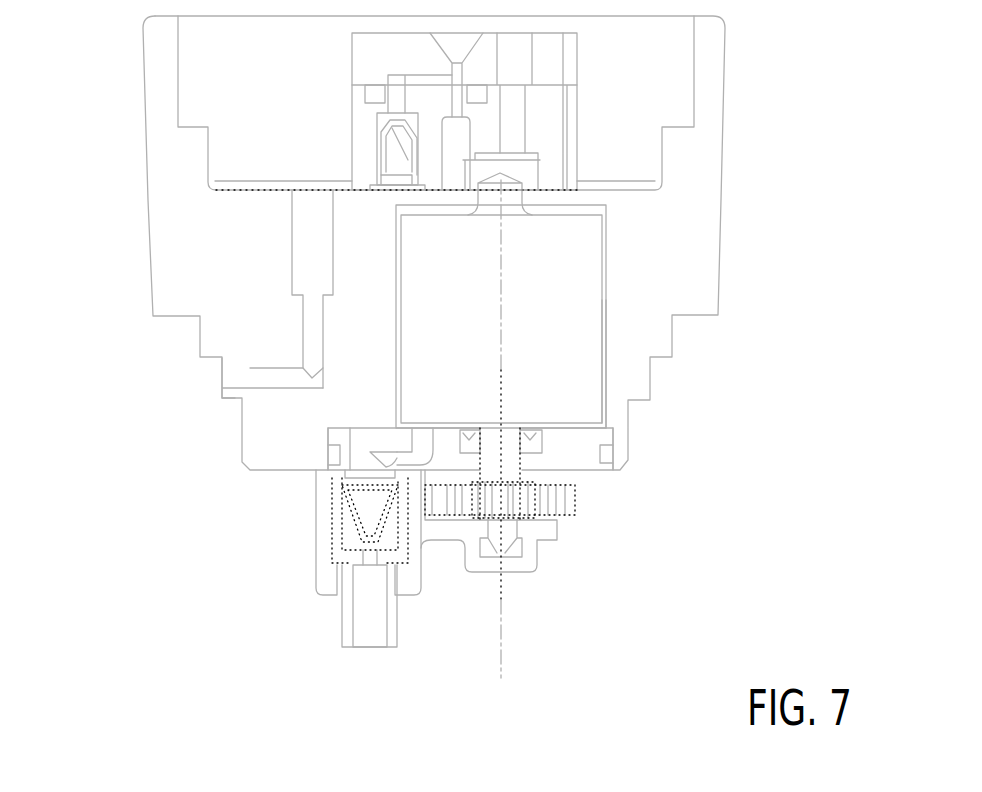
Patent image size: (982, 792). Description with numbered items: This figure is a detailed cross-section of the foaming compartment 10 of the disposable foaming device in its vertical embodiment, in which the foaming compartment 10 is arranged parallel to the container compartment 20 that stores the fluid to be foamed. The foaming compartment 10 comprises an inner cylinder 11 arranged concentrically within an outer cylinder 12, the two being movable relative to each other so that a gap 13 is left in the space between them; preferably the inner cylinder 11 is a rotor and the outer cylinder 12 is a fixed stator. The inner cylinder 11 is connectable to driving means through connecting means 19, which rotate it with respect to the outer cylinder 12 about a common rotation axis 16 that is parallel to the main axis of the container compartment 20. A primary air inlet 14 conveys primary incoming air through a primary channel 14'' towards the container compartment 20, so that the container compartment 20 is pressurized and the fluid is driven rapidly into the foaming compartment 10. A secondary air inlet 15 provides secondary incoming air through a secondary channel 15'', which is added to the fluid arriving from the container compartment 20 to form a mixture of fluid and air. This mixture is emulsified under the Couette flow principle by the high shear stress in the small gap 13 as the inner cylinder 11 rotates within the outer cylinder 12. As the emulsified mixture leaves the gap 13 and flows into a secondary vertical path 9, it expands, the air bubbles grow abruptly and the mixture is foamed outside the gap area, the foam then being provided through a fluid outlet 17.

The secondary vertical path 9 is at (395, 436).
The foaming compartment 10 is at (687, 183).
The inner cylinder 11 is at (585, 237).
The outer cylinder 12 is at (606, 292).
The gap 13 is at (606, 376).
The primary air inlet 14 is at (209, 378).
The primary channel 14'' is at (188, 289).
The secondary air inlet 15 is at (264, 111).
The secondary channel 15'' is at (251, 151).
The rotation axis 16 is at (504, 667).
The fluid outlet 17 is at (363, 627).
The connecting means 19 is at (558, 500).
The container compartment 20 is at (677, 53).